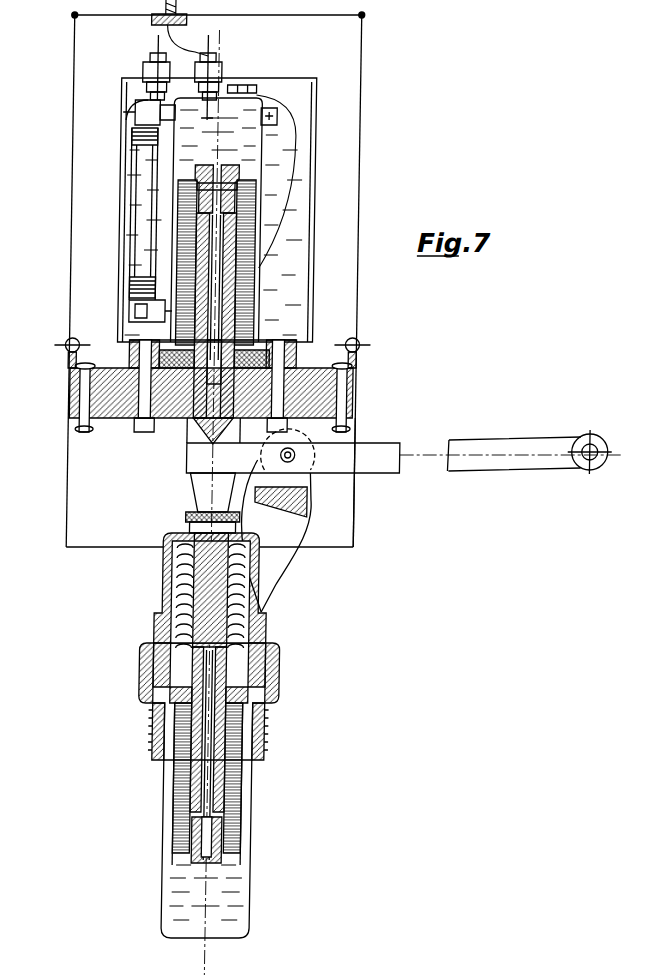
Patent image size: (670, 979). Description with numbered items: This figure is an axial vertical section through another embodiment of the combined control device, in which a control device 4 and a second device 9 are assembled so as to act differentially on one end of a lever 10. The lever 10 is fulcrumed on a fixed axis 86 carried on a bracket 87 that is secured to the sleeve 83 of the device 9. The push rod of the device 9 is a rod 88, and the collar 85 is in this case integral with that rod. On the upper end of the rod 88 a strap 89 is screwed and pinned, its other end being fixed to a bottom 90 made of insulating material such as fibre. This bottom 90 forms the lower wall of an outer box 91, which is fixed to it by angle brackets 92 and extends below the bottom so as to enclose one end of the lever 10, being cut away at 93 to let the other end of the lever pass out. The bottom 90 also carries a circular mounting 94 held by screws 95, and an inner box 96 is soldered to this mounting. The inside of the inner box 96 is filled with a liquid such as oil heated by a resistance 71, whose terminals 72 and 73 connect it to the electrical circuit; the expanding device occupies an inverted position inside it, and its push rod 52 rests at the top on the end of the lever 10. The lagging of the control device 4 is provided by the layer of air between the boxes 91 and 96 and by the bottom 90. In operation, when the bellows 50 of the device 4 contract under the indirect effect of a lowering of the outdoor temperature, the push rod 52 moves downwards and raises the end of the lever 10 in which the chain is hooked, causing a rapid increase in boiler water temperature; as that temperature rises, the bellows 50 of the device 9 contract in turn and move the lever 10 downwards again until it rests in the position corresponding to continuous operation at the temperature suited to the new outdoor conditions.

The control device 4 is at (392, 135).
The device 9 is at (310, 670).
The lever 10 is at (376, 446).
The bellows 50 is at (254, 229).
The push rod 52 is at (237, 333).
The resistance 71 is at (134, 137).
The terminal 72 is at (224, 65).
The terminal 73 is at (149, 63).
The sleeve 83 is at (173, 585).
The collar 85 is at (160, 678).
The fixed axis 86 is at (302, 452).
The bracket 87 is at (290, 541).
The rod 88 is at (212, 625).
The strap 89 is at (196, 485).
The bottom 90 is at (121, 414).
The outer box 91 is at (75, 168).
The angle brackets 92 is at (73, 357).
The cut away 93 is at (365, 493).
The circular mounting 94 is at (299, 357).
The screws 95 is at (157, 414).
The inner box 96 is at (320, 158).